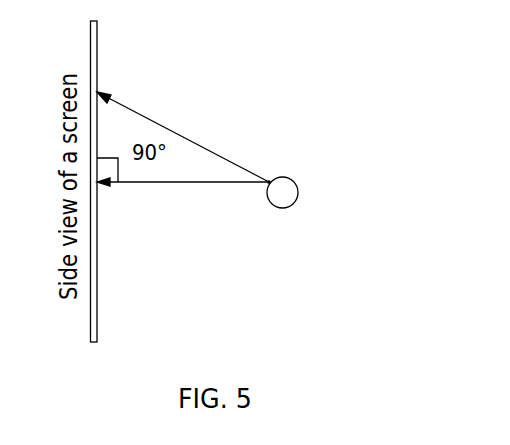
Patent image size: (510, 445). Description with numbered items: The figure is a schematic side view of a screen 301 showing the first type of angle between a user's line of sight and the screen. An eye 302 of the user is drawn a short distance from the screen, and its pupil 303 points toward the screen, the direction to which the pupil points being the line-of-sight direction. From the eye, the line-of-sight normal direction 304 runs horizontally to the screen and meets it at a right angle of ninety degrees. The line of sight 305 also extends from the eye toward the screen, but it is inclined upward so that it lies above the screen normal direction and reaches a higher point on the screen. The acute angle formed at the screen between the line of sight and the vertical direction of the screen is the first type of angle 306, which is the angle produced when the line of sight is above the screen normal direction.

The screen 301 is at (97, 303).
The eye 302 is at (297, 183).
The pupil 303 is at (270, 180).
The line-of-sight normal direction 304 is at (147, 183).
The line of sight 305 is at (172, 131).
The first type of angle 306 is at (103, 108).